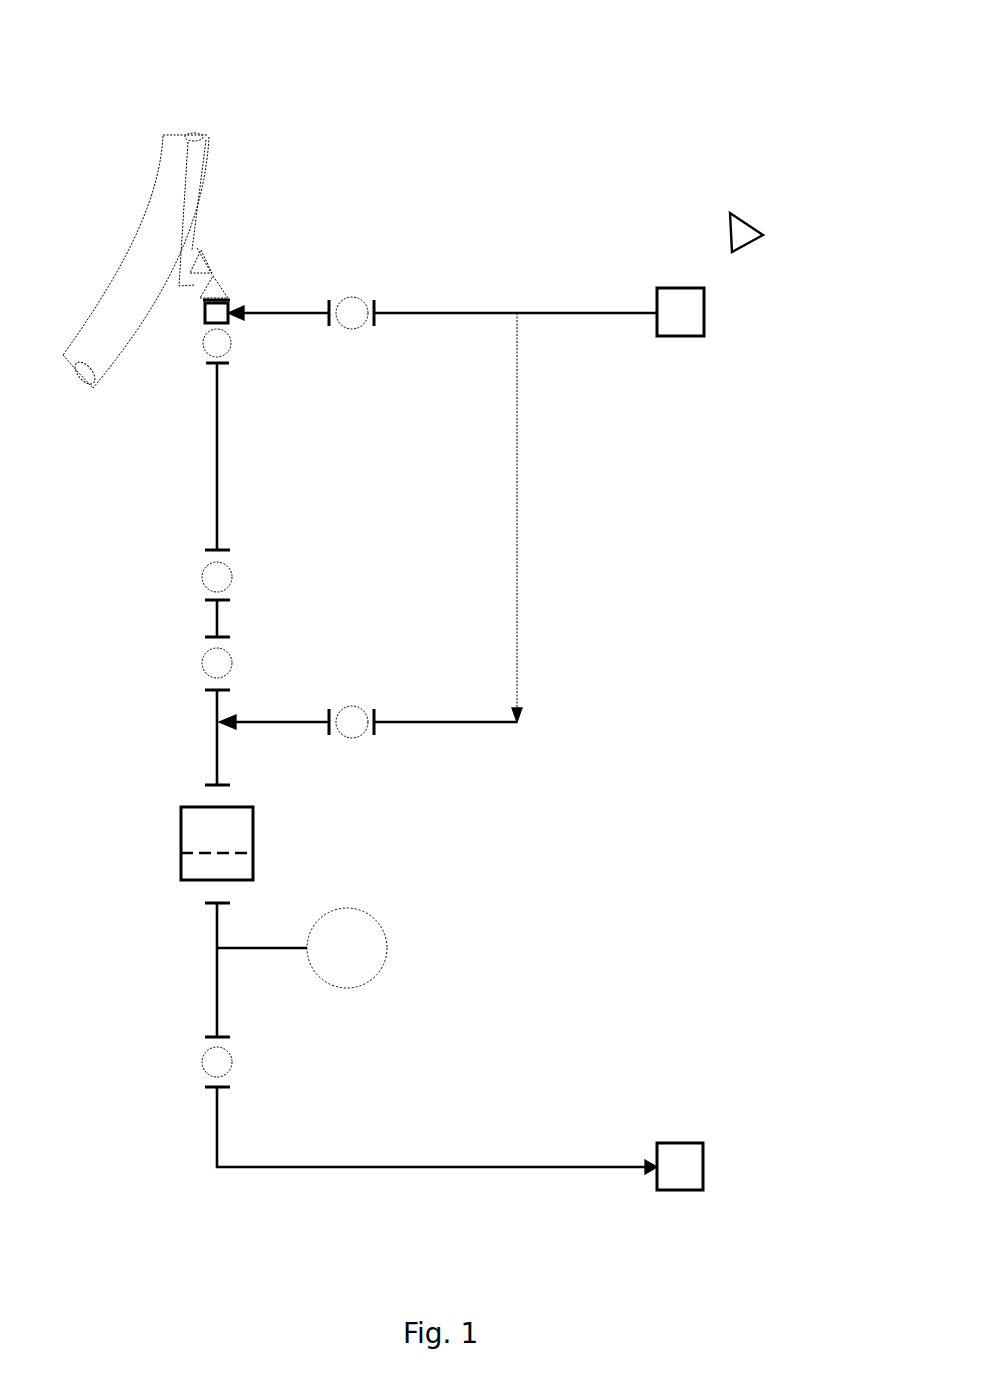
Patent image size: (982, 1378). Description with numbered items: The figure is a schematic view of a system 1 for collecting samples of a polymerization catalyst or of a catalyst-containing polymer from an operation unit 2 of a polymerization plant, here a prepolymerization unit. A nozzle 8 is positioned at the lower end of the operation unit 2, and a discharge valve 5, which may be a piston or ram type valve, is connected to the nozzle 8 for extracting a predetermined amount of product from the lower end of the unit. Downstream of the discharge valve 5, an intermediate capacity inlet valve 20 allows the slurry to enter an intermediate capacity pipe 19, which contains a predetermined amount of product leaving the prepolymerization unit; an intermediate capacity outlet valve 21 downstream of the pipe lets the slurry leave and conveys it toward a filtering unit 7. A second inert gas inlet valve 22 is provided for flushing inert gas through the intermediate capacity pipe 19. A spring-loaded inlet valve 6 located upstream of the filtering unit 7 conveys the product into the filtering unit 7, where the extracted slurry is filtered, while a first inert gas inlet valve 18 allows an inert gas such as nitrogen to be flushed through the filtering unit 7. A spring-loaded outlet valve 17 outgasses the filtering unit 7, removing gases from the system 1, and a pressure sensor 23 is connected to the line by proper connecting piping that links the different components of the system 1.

The system 1 is at (747, 220).
The operation unit 2 is at (182, 180).
The discharge valve 5 is at (212, 274).
The inlet valve 6 is at (212, 663).
The filtering unit 7 is at (190, 844).
The nozzle 8 is at (193, 242).
The outlet valve 17 is at (212, 1062).
The first inert gas inlet valve 18 is at (352, 726).
The intermediate capacity pipe 19 is at (213, 480).
The intermediate capacity inlet valve 20 is at (215, 342).
The intermediate capacity outlet valve 21 is at (218, 577).
The second inert gas inlet valve 22 is at (350, 305).
The pressure sensor 23 is at (360, 950).